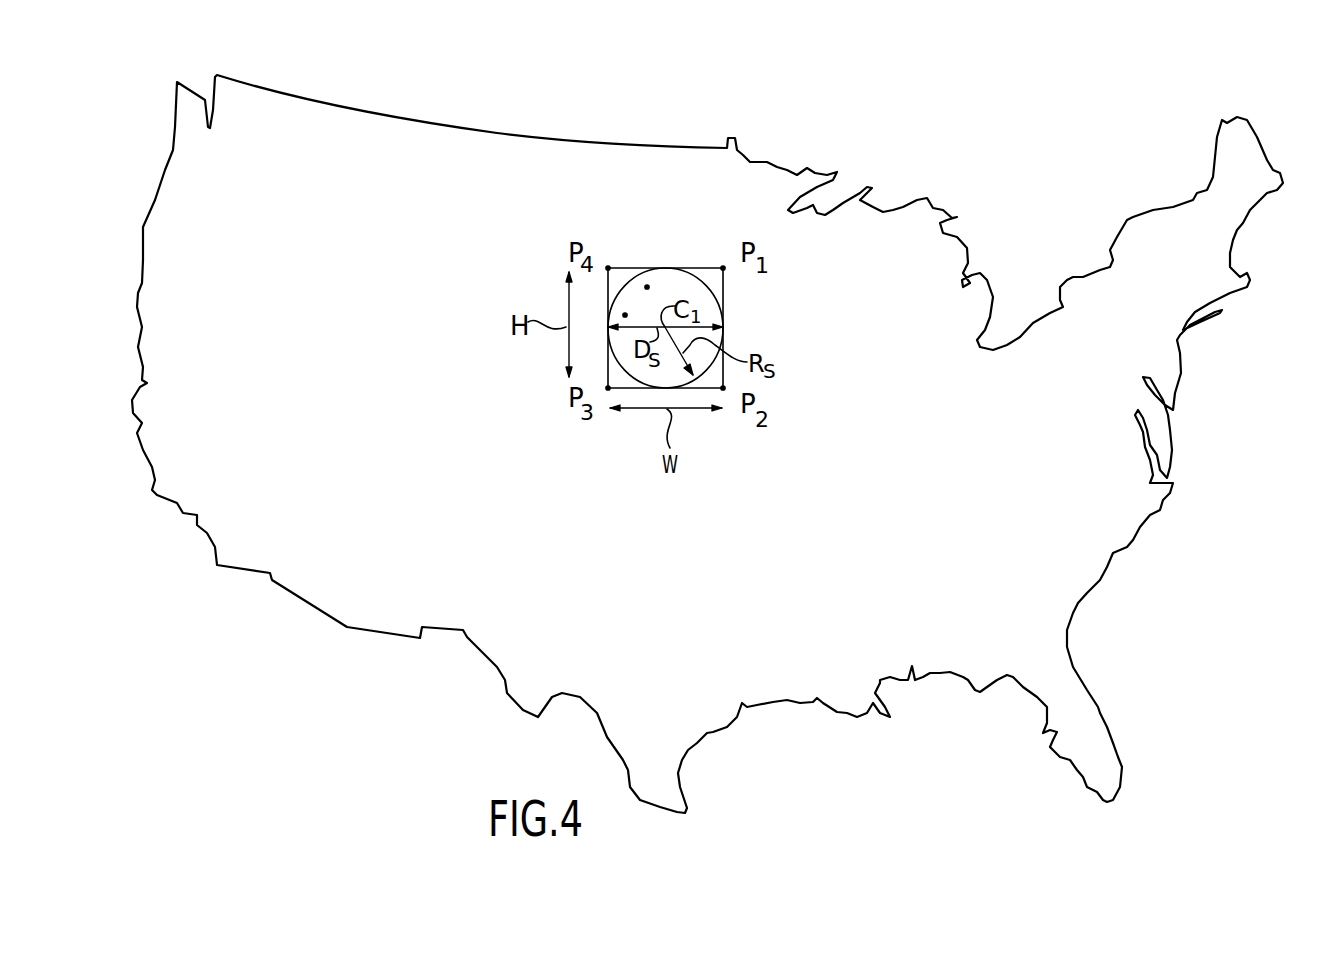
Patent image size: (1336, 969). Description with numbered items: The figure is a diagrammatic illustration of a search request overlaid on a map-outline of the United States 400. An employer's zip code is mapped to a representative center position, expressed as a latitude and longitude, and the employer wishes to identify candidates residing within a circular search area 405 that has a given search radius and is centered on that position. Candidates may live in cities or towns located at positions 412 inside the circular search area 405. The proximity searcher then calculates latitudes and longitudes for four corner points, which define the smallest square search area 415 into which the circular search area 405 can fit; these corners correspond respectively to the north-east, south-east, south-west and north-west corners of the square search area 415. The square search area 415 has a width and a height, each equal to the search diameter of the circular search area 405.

The map-outline of the United States 400 is at (615, 146).
The circular search area 405 is at (713, 291).
The positions 412 is at (625, 315).
The square search area 415 is at (686, 268).